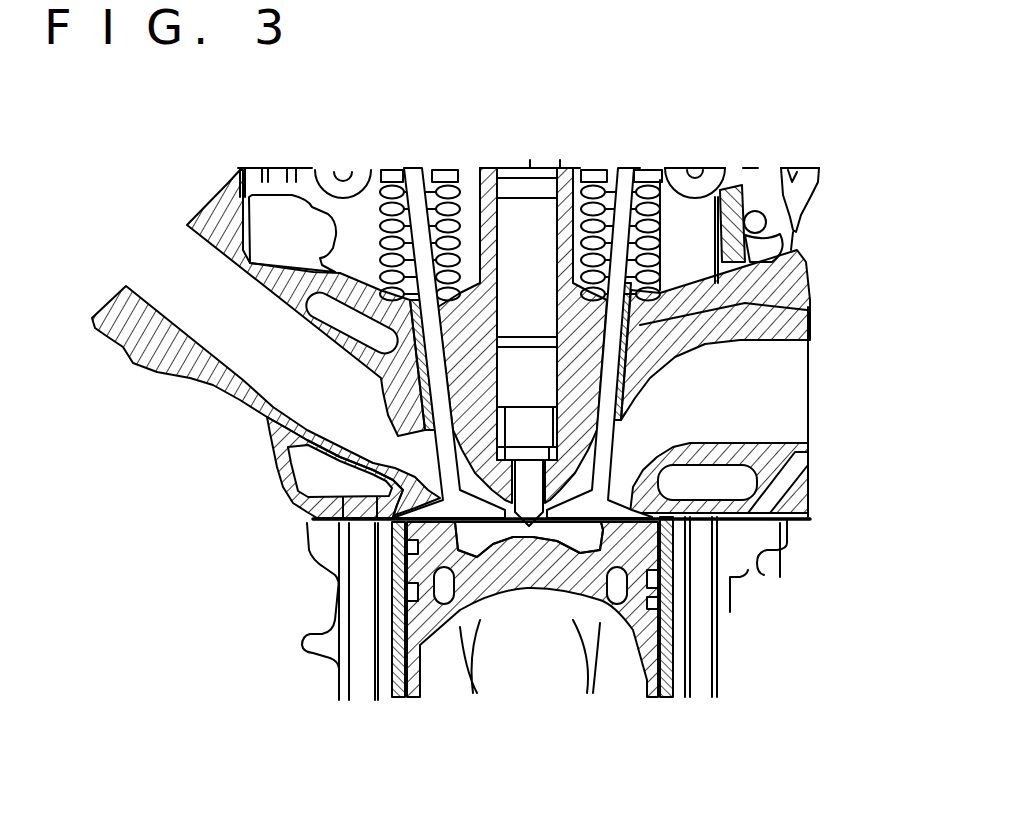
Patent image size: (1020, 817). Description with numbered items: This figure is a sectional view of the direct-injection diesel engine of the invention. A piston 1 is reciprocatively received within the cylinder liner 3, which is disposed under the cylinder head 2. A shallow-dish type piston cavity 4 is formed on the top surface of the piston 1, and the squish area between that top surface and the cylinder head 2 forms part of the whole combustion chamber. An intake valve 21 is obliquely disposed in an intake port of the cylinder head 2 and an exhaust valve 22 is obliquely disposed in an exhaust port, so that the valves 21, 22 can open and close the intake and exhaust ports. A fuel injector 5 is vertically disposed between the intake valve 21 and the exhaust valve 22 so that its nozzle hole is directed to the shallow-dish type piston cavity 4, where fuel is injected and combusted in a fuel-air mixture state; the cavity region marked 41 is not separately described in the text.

The piston 1 is at (498, 622).
The cylinder head 2 is at (478, 385).
The cylinder liner 3 is at (677, 625).
The shallow-dish type piston cavity 4 is at (626, 657).
The fuel injector 5 is at (537, 383).
The intake valve 21 is at (437, 447).
The exhaust valve 22 is at (611, 463).
The combustion chamber cavity 41 is at (612, 552).